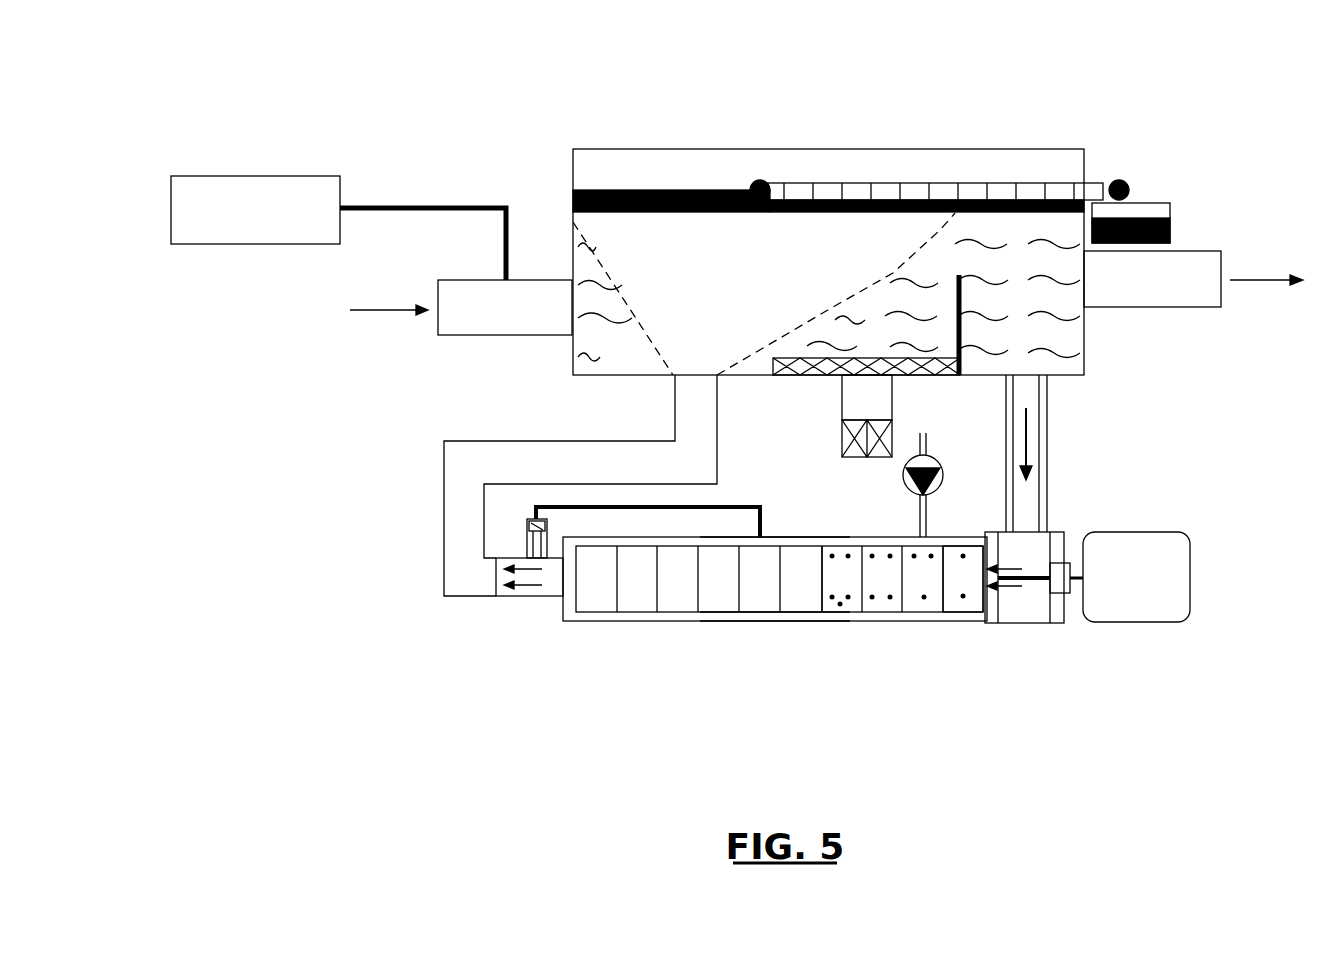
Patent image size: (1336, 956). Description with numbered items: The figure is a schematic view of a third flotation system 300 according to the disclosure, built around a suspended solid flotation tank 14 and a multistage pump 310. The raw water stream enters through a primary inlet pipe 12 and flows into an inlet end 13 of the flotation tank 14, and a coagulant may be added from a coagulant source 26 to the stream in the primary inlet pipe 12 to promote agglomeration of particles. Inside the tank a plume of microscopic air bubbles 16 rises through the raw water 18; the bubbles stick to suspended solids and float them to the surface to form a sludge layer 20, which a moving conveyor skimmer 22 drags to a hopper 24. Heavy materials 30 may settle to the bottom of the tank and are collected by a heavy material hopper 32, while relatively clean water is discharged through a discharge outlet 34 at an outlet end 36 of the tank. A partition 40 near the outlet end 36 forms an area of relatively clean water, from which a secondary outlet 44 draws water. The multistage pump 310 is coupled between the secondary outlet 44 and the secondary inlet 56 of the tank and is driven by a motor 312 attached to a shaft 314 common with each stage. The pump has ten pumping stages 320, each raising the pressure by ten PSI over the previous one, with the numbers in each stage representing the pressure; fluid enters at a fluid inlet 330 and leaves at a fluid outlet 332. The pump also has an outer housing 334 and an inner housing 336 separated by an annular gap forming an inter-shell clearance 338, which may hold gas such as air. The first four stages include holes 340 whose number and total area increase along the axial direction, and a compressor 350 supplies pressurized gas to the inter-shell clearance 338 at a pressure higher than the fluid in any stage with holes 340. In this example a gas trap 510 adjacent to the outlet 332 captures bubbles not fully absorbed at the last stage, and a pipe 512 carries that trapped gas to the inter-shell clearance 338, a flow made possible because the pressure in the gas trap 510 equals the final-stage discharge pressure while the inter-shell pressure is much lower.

The system 300 is at (1068, 69).
The coagulant source 26 is at (300, 176).
The primary inlet pipe 12 is at (455, 285).
The flotation tank 14 is at (573, 218).
The sludge layer 20 is at (666, 190).
The conveyor skimmer 22 is at (948, 183).
The hopper 24 is at (1172, 224).
The discharge outlet 34 is at (1194, 297).
The air bubbles 16 is at (728, 298).
The inlet end 13 is at (605, 367).
The raw water 18 is at (895, 341).
The outlet end 36 is at (1008, 343).
The heavy materials 30 is at (945, 371).
The partition 40 is at (984, 371).
The heavy material hopper 32 is at (842, 414).
The secondary inlet 56 is at (717, 412).
The secondary outlet 44 is at (1047, 440).
The compressor 350 is at (943, 478).
The shaft 314 is at (1076, 570).
The fluid inlet 330 is at (1030, 612).
The motor 312 is at (1192, 578).
The multistage pump 310 is at (892, 621).
The pumping stages 320 is at (963, 555).
The outer housing 334 is at (770, 621).
The inner housing 336 is at (733, 535).
The inter-shell clearance 338 is at (828, 615).
The holes 340 is at (963, 600).
The fluid outlet 332 is at (550, 596).
The gas trap 510 is at (528, 517).
The pipe 512 is at (584, 505).